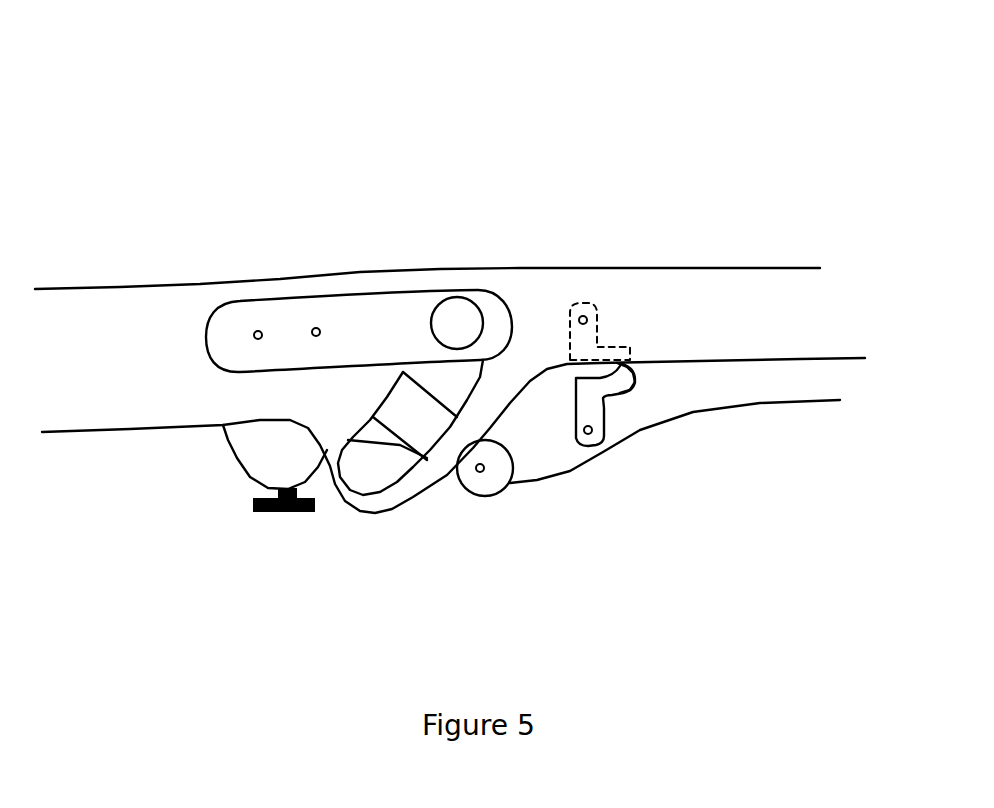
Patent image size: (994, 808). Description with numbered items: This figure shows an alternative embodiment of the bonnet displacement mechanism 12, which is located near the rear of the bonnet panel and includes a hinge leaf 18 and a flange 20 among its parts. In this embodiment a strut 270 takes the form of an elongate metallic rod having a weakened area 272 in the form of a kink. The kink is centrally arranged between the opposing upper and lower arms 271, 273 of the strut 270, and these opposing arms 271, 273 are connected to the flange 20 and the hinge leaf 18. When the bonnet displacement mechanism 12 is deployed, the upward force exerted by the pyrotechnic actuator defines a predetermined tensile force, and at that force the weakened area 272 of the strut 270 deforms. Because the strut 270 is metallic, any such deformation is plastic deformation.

The bonnet displacement mechanism 12 is at (474, 108).
The hinge leaf 18 is at (453, 449).
The flange 20 is at (324, 225).
The strut 270 is at (629, 501).
The upper arm 271 is at (566, 271).
The weakened area 272 is at (642, 280).
The lower arm 273 is at (578, 491).